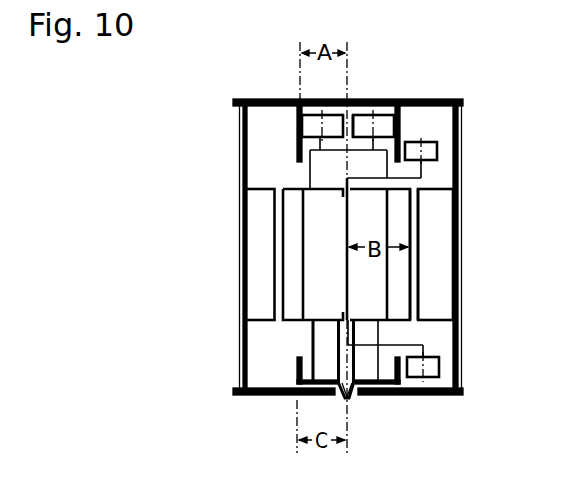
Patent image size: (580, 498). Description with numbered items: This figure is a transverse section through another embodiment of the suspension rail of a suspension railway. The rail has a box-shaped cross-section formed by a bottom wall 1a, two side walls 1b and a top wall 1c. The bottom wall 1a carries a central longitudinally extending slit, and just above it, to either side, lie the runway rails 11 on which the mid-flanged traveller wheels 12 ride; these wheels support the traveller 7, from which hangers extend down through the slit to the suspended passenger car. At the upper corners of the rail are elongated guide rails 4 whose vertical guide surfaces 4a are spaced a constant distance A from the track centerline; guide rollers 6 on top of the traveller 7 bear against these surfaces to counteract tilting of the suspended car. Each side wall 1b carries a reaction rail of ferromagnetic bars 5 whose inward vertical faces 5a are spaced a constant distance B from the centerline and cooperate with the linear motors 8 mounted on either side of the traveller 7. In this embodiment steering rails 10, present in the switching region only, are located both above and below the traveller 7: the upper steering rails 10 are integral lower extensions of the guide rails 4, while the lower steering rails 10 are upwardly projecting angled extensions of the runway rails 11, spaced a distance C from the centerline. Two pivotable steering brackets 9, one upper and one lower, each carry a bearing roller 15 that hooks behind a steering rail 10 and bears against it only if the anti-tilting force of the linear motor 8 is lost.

The bottom wall 1a is at (267, 390).
The side wall 1b is at (240, 210).
The top wall 1c is at (270, 98).
The guide rail 4 is at (393, 122).
The guide surface 4a is at (367, 120).
The ferromagnetic bar 5 is at (437, 265).
The vertical face 5a is at (419, 209).
The guide roller 6 is at (373, 123).
The traveller 7 is at (318, 255).
The linear motor 8 is at (260, 295).
The steering bracket 9 is at (385, 326).
The steering rail 10 is at (297, 155).
The runway rail 11 is at (394, 368).
The traveller wheel 12 is at (367, 365).
The bearing roller 15 is at (437, 150).